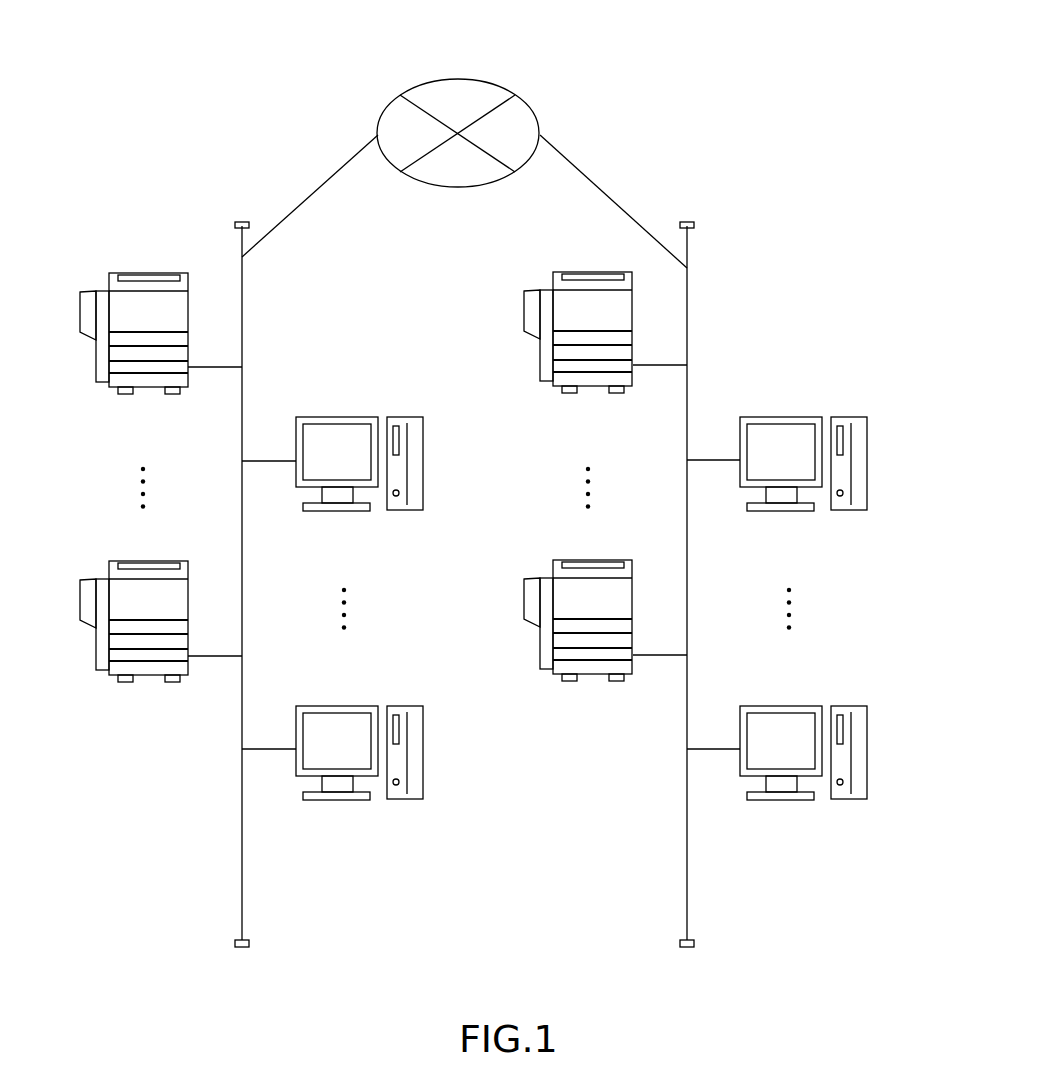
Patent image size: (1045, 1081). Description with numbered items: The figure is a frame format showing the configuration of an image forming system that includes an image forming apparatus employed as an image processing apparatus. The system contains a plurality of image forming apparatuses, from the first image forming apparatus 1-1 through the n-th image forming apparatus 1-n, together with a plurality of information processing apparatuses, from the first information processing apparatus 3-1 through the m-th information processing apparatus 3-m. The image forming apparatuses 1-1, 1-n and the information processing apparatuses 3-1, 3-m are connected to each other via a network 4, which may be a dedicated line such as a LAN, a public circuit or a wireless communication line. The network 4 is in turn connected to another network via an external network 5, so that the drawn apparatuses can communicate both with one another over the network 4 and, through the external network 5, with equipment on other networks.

The image forming apparatus 1-1 is at (188, 382).
The image forming apparatus 1-n is at (188, 670).
The information processing apparatus 3-1 is at (423, 495).
The information processing apparatus 3-m is at (423, 785).
The network 4 is at (242, 902).
The external network 5 is at (487, 80).